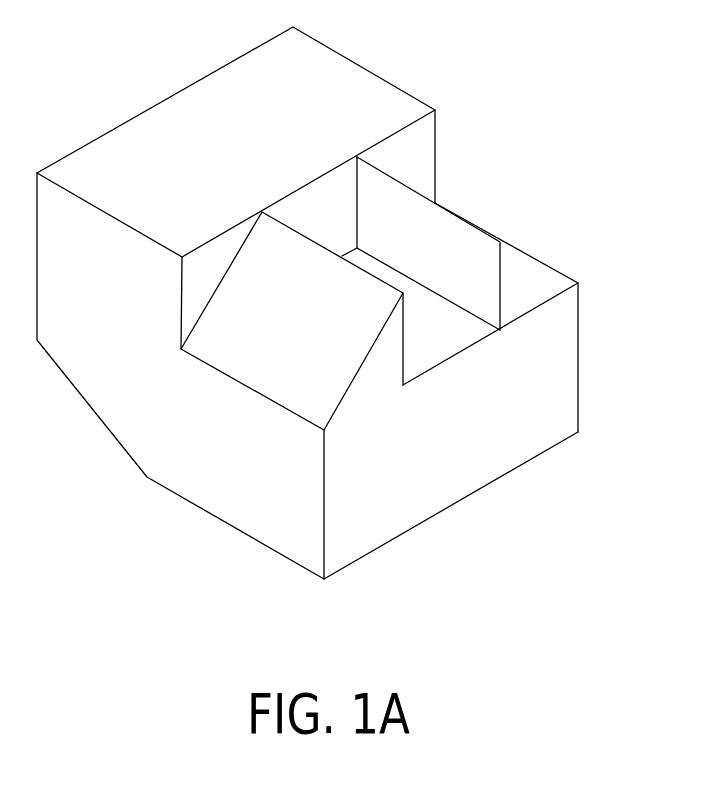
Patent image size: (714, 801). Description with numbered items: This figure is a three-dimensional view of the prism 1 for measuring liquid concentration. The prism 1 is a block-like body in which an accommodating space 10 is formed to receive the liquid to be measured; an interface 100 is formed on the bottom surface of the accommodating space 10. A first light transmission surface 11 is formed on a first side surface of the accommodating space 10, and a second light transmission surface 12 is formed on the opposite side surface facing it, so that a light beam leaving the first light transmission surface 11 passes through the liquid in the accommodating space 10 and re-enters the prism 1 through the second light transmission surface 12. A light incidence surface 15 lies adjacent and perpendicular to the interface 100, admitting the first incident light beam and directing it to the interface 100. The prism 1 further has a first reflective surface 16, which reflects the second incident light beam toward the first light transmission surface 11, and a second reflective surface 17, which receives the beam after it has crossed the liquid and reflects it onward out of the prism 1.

The prism for measuring liquid concentration 1 is at (345, 323).
The accommodating space 10 is at (409, 252).
The first light transmission surface 11 is at (450, 243).
The second light transmission surface 12 is at (405, 358).
The light incidence surface 15 is at (390, 518).
The first reflective surface 16 is at (540, 260).
The second reflective surface 17 is at (278, 318).
The interface 100 is at (440, 352).